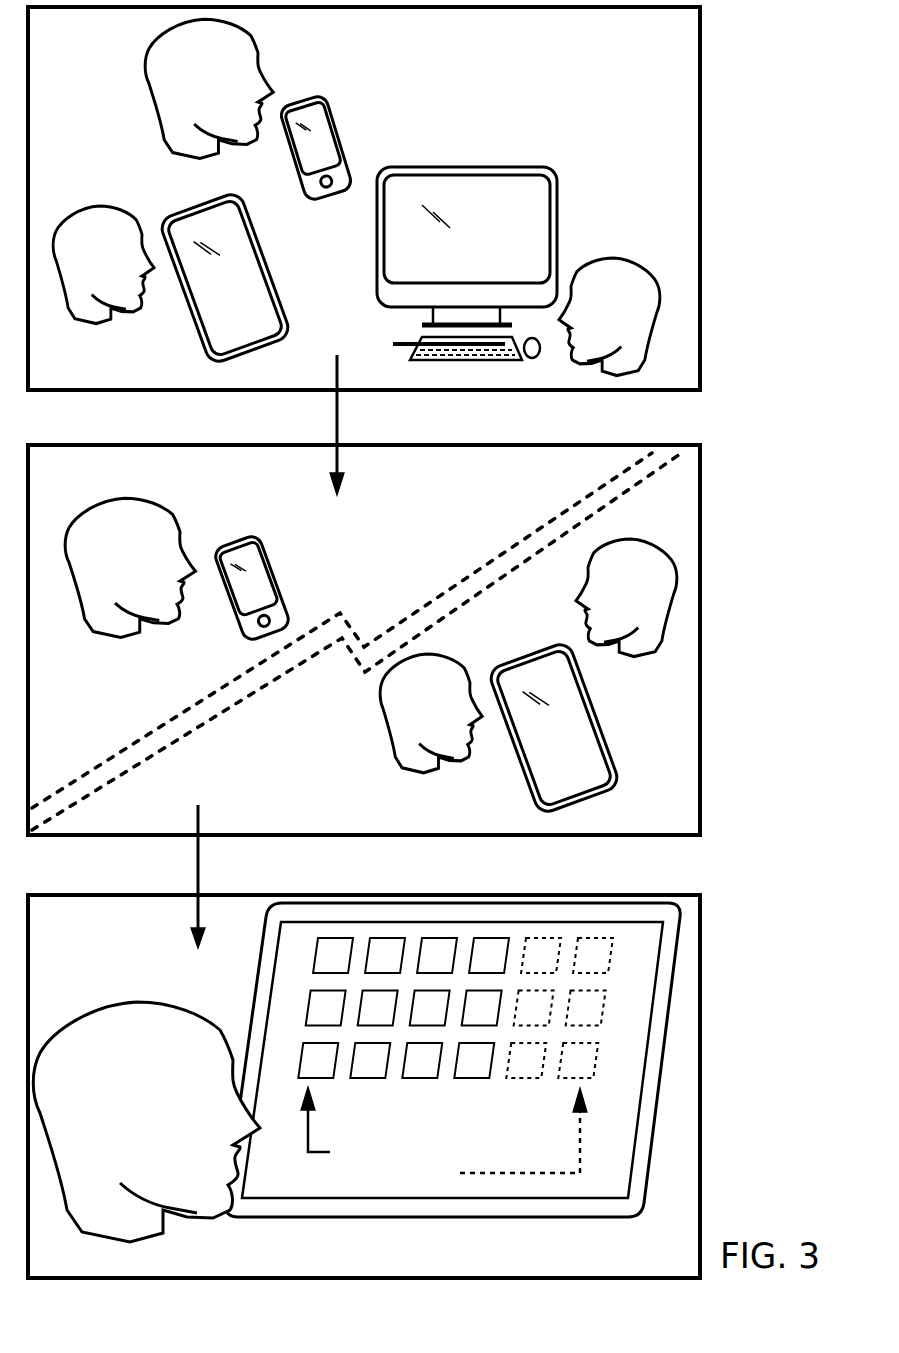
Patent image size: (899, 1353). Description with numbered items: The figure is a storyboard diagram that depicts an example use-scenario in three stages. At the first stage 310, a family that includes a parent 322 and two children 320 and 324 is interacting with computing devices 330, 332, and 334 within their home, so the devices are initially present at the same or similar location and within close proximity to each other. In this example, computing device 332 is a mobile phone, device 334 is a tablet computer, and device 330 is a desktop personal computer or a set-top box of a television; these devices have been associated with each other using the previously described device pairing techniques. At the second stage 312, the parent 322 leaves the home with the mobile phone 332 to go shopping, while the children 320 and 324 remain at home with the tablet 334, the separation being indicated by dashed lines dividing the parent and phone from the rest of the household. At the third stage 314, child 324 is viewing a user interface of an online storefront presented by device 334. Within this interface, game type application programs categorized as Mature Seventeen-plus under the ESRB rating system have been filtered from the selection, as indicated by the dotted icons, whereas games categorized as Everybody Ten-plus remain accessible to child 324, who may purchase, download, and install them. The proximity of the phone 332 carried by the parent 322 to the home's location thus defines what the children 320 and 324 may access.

The first storyboard stage 310 is at (73, 39).
The second storyboard stage 312 is at (73, 473).
The third storyboard stage 314 is at (73, 925).
The child 320 is at (647, 305).
The parent 322 is at (205, 75).
The child 324 is at (97, 253).
The computing device 330 is at (535, 276).
The computing device 332 is at (338, 165).
The computing device 334 is at (252, 310).